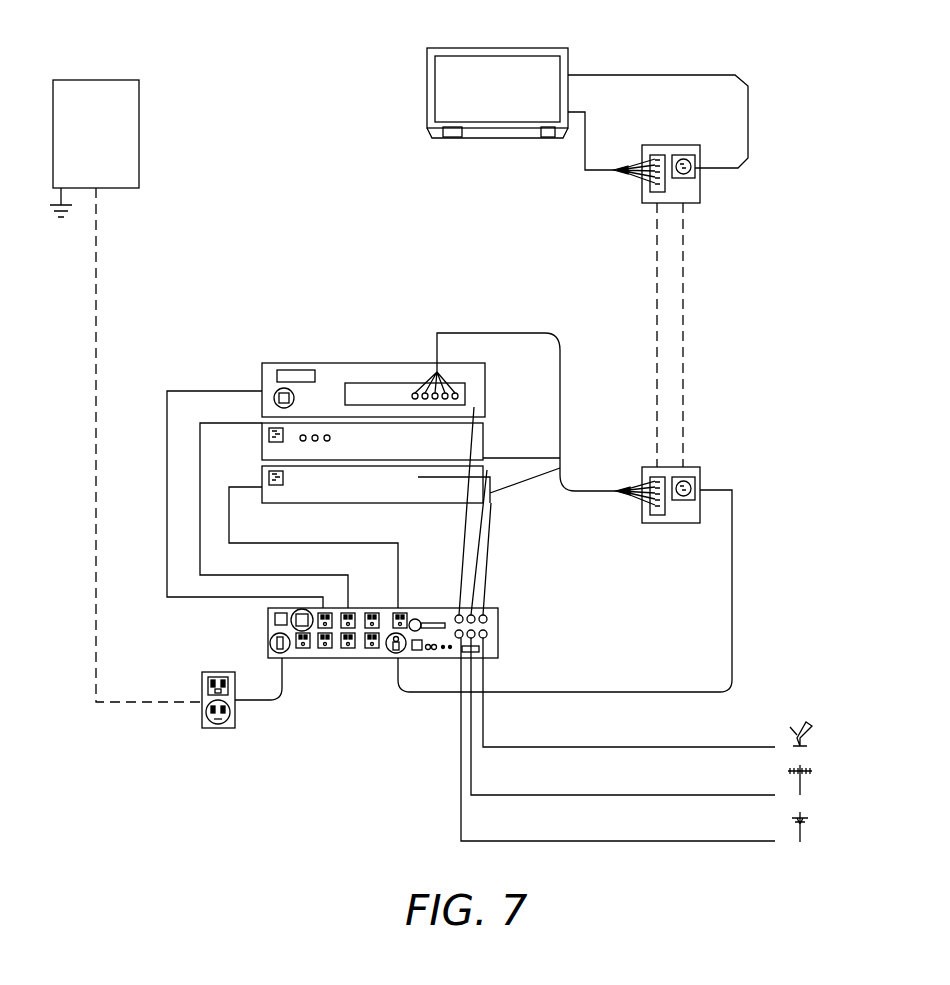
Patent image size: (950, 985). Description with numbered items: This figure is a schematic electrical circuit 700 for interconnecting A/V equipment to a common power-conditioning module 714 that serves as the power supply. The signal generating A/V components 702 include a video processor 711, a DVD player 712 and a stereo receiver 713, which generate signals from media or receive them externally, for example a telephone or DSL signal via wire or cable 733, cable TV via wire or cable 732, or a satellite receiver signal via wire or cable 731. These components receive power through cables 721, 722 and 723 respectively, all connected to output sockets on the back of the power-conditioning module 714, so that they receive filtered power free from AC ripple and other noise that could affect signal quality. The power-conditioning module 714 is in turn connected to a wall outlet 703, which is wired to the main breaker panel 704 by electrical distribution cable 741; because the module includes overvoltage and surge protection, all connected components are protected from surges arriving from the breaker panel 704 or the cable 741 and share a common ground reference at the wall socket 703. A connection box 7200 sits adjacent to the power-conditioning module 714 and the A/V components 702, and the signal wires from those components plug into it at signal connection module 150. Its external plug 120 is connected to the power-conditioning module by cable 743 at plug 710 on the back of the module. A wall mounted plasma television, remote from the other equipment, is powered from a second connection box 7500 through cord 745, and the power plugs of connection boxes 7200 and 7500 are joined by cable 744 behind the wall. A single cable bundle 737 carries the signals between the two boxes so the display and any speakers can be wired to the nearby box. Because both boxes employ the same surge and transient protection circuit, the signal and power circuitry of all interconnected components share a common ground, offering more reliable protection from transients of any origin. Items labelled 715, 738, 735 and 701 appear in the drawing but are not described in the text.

The schematic electrical circuit 700 is at (285, 100).
The breaker panel 704 is at (98, 70).
The cable 741 is at (97, 665).
The plasma TV 715 is at (420, 70).
The cord 745 is at (748, 78).
The signal cable to TV 738 is at (600, 177).
The second connection box 7500 is at (708, 196).
The signal connection module 150 is at (650, 158).
The external plug 120 is at (688, 155).
The single cable bundle 737 is at (650, 304).
The cable 744 is at (690, 315).
The connection box 7200 is at (706, 470).
The signal cable from component rack 735 is at (560, 498).
The A/V components 702 is at (335, 338).
The video processor 711 is at (262, 375).
The DVD player 712 is at (484, 438).
The stereo receiver 713 is at (372, 503).
The cable 721 is at (167, 450).
The cable 722 is at (201, 492).
The cable 723 is at (400, 566).
The plug 710 is at (392, 668).
The power-conditioning module 714 is at (263, 632).
The power cable 701 is at (608, 643).
The cable 743 is at (738, 621).
The wall outlet 703 is at (199, 729).
The wire or cable 731 is at (777, 720).
The wire or cable 732 is at (700, 789).
The wire or cable 733 is at (647, 852).